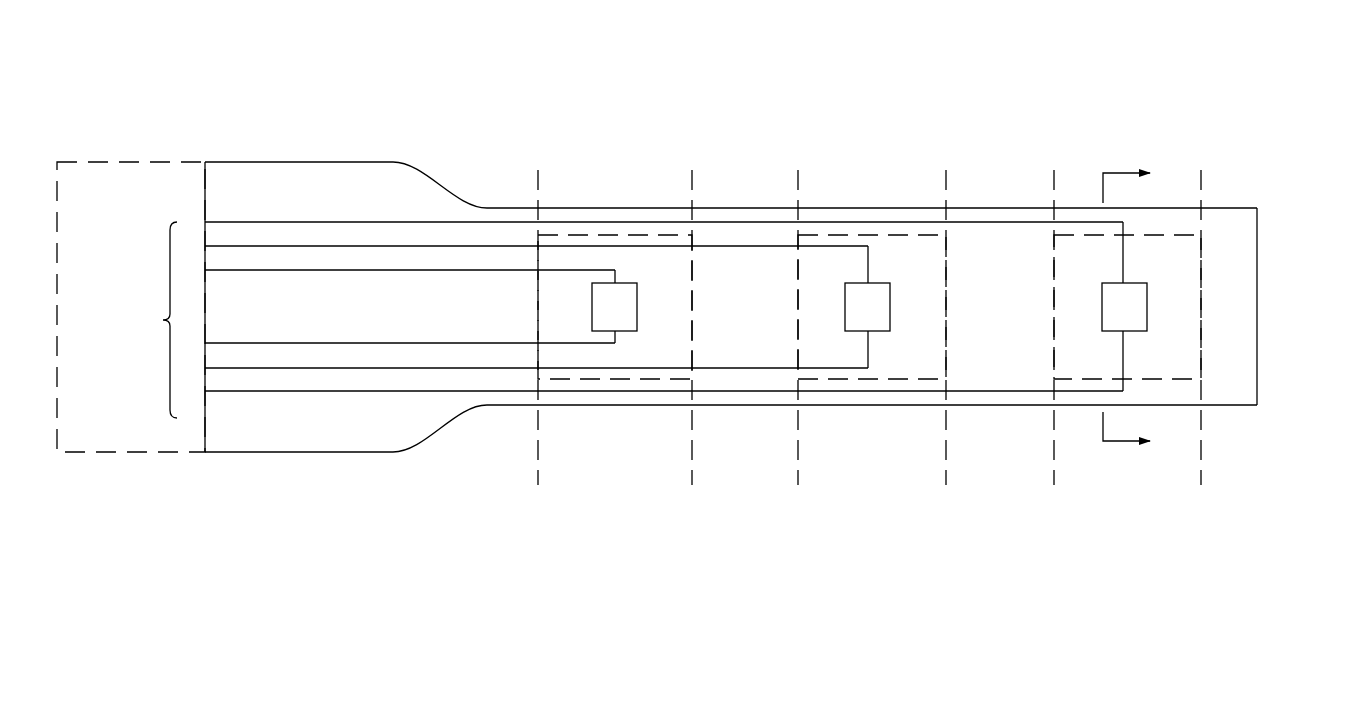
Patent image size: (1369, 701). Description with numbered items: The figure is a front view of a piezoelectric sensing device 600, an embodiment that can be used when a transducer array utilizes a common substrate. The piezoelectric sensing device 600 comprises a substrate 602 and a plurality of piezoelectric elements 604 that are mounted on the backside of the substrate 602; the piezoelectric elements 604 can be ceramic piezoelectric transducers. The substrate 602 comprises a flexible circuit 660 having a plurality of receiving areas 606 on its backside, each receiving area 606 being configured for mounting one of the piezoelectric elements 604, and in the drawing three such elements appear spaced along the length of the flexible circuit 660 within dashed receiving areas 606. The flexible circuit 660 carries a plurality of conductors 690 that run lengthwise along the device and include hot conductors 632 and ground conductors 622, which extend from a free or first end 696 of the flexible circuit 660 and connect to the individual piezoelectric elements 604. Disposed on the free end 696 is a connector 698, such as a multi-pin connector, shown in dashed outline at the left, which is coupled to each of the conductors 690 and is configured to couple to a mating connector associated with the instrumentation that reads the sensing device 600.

The piezoelectric sensing device 600 is at (1150, 68).
The substrate 602 is at (1265, 245).
The piezoelectric elements 604 is at (637, 297).
The receiving areas 606 is at (692, 192).
The ground conductors 622 is at (398, 391).
The hot conductors 632 is at (277, 223).
The flexible circuit 660 is at (1258, 305).
The conductors 690 is at (616, 320).
The free end 696 is at (173, 160).
The connector 698 is at (115, 160).